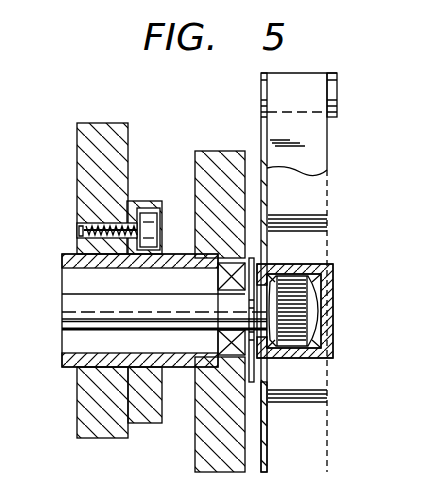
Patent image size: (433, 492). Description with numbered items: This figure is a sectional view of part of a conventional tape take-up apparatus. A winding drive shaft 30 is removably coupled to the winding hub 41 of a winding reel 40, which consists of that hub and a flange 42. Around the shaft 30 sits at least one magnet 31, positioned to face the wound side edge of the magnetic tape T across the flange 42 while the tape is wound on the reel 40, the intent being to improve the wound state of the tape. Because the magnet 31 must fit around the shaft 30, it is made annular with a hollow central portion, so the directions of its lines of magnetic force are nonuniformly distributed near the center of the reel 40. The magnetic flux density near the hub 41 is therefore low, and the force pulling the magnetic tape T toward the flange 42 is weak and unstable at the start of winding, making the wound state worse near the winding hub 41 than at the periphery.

The winding drive shaft 30 is at (65, 308).
The magnet 31 is at (218, 152).
The winding reel 40 is at (335, 326).
The winding hub 41 is at (335, 291).
The flange 42 is at (268, 440).
The magnetic tape T is at (320, 160).